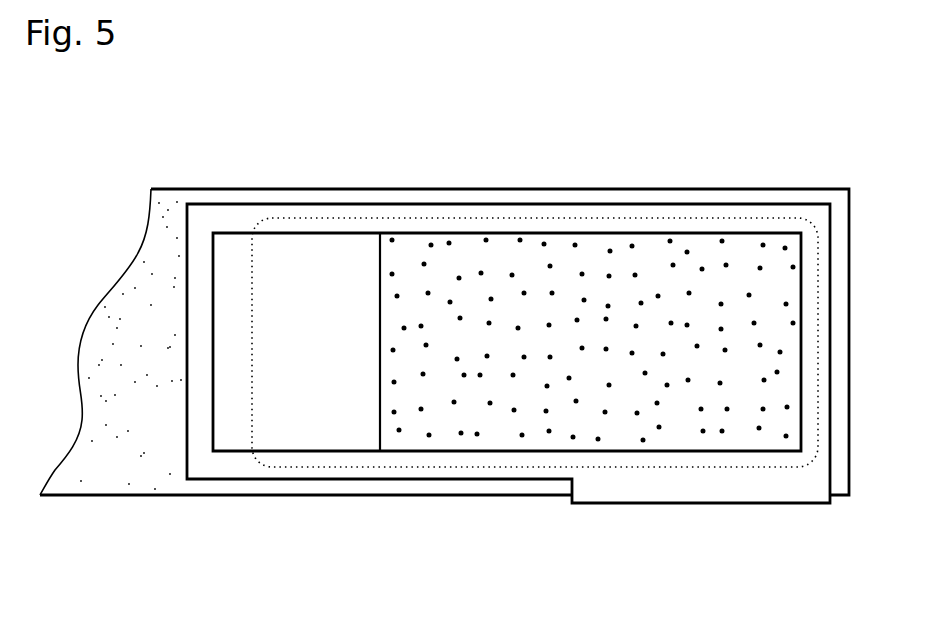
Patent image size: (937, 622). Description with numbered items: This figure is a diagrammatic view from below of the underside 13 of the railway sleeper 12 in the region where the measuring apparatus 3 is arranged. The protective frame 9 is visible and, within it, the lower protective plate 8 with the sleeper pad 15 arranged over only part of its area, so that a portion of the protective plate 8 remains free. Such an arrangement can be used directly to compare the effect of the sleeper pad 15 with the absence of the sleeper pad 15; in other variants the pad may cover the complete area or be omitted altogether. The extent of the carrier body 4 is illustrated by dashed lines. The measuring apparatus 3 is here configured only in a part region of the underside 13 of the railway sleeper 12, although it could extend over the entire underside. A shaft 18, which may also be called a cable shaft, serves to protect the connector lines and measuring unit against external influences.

The measuring apparatus 3 is at (687, 232).
The carrier body 4 is at (315, 220).
The lower protective plate 8 is at (285, 290).
The protective frame 9 is at (237, 220).
The railway sleeper 12 is at (143, 295).
The underside 13 is at (123, 350).
The sleeper pad 15 is at (492, 313).
The shaft 18 is at (817, 493).